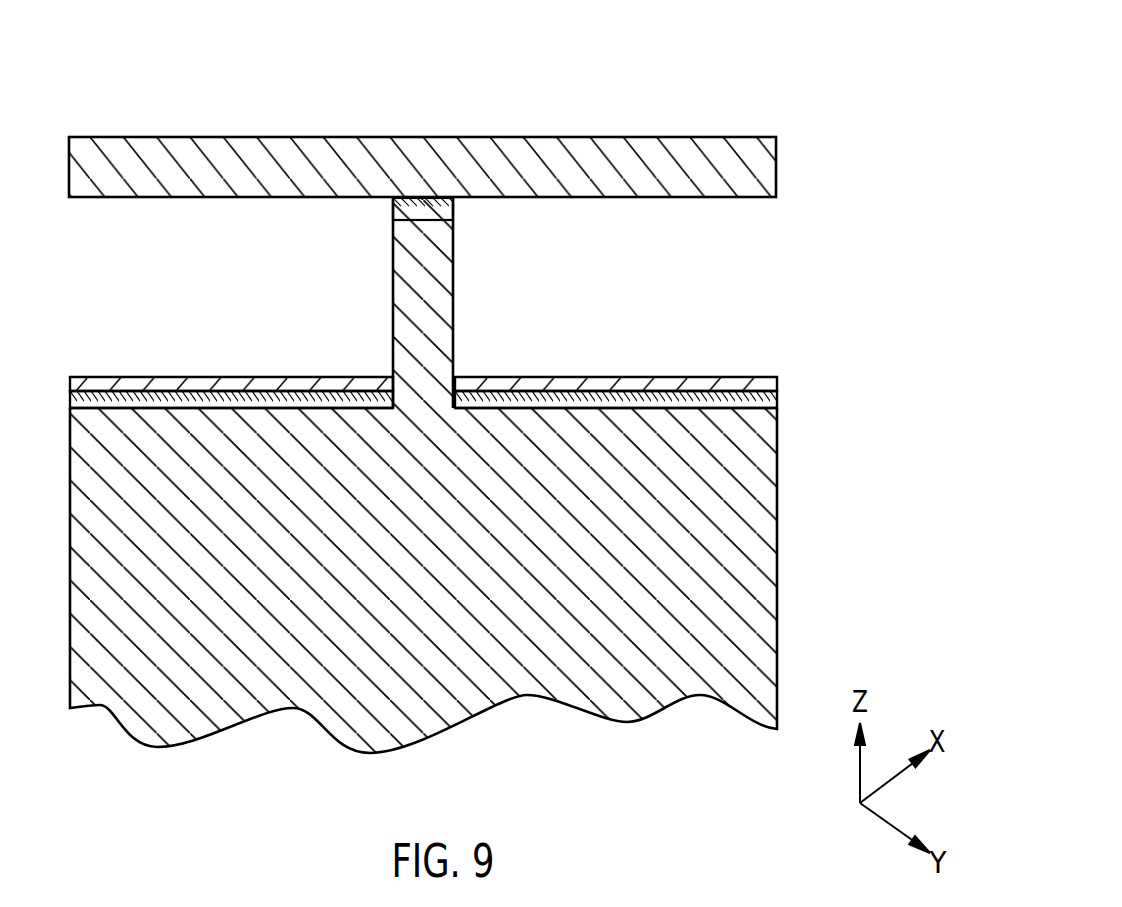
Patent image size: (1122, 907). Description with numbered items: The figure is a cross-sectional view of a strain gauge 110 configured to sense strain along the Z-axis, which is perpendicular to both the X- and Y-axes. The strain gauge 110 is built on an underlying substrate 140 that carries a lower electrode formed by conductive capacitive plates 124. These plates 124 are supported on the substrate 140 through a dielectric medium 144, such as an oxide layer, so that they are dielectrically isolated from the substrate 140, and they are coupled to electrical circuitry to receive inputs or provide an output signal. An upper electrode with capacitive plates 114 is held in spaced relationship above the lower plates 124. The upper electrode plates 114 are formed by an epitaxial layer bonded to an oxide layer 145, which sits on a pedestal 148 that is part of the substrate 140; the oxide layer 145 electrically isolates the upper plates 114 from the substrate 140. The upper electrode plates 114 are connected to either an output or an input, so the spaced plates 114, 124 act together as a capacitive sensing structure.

The strain gauge 110 is at (690, 70).
The upper electrode capacitive plates 114 is at (723, 197).
The conductive capacitive plates 124 is at (637, 377).
The substrate 140 is at (762, 458).
The dielectric medium 144 is at (727, 390).
The oxide layer 145 is at (392, 211).
The pedestal 148 is at (453, 248).